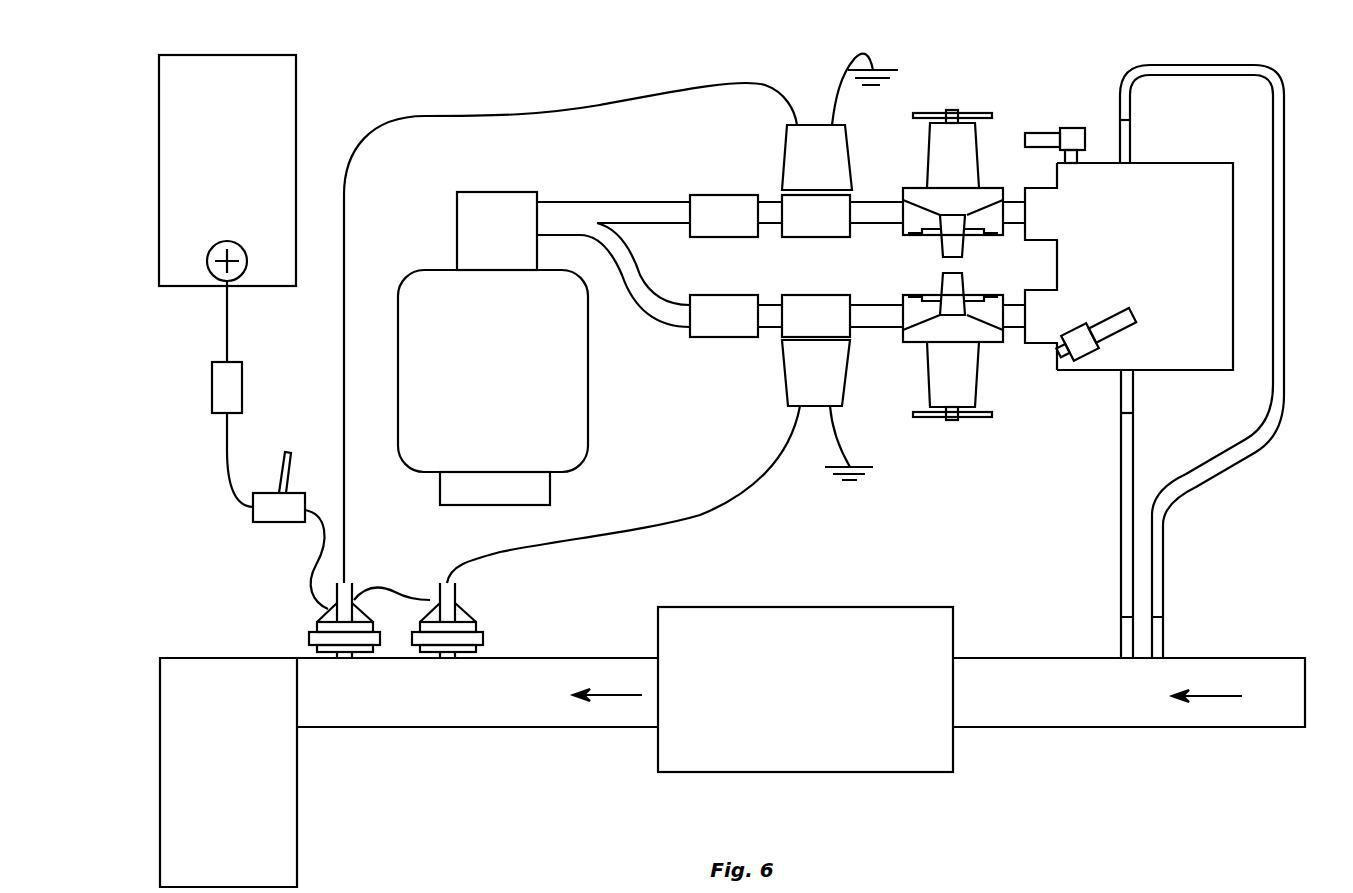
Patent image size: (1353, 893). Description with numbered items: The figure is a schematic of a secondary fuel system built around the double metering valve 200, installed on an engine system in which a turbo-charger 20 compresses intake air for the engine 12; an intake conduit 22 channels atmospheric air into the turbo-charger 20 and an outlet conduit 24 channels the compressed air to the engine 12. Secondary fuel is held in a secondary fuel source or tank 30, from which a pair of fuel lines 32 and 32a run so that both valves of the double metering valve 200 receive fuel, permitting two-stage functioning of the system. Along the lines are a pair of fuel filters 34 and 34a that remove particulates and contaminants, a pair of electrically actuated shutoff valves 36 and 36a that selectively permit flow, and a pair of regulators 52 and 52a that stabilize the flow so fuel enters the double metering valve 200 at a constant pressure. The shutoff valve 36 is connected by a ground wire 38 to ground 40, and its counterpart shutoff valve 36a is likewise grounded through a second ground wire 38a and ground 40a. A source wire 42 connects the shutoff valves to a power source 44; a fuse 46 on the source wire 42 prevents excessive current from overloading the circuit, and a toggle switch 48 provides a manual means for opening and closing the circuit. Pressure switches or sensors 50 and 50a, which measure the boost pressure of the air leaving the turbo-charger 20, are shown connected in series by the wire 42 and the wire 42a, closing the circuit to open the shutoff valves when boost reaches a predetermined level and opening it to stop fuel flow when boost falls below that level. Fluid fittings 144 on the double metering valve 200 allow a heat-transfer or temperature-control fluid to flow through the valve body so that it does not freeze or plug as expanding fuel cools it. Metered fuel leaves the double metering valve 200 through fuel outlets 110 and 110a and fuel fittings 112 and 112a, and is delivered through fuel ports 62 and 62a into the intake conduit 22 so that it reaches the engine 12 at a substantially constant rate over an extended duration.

The engine 12 is at (222, 789).
The turbo-charger 20 is at (795, 697).
The intake conduit 22 is at (1030, 706).
The outlet conduit 24 is at (487, 704).
The secondary fuel source 30 is at (482, 381).
The fuel line 32 is at (618, 202).
The fuel line 32a is at (625, 302).
The fuel filter 34 is at (702, 192).
The filter 34a is at (705, 338).
The shutoff valve 36 is at (780, 158).
The shutoff valve 36a is at (784, 372).
The ground wire 38 is at (838, 62).
The second ground wire 38a is at (836, 437).
The ground 40 is at (888, 65).
The second ground 40a is at (872, 470).
The source wire 42 is at (386, 136).
The second electrical wiring 42a is at (387, 593).
The power source 44 is at (217, 153).
The fuse 46 is at (243, 392).
The switch 48 is at (276, 524).
The pressure switch 50 is at (354, 590).
The switch/sensor 50a is at (470, 607).
The regulator 52 is at (979, 153).
The regulator 52a is at (980, 378).
The fuel port 62 is at (1165, 635).
The second exhaust sampling line 62a is at (1120, 635).
The fuel outlet 110 is at (1131, 157).
The fuel outlet 110a is at (1133, 385).
The fuel fitting 112 is at (1131, 132).
The outlet fitting 112a is at (1134, 415).
The fluid fitting 144 is at (1074, 130).
The double metering valve 200 is at (1125, 271).